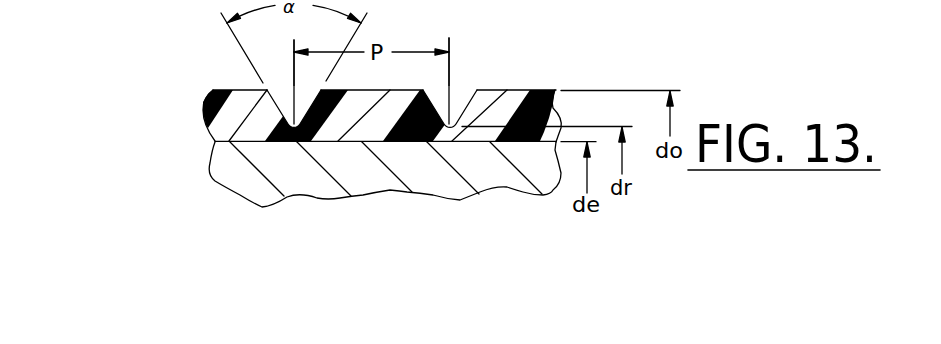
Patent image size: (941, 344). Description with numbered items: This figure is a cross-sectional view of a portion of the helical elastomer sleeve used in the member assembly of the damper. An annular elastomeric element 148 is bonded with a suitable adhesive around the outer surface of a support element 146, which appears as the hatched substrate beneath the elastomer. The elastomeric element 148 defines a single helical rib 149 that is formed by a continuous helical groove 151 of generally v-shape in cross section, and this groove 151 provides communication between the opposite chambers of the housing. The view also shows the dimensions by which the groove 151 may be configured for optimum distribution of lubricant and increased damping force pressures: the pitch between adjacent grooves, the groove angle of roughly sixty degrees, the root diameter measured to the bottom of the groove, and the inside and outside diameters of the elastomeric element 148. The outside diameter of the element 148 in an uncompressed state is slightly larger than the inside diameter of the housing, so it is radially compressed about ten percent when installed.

The support element 146 is at (225, 160).
The elastomeric element 148 is at (223, 122).
The helical rib 149 is at (545, 93).
The helical groove 151 is at (471, 96).